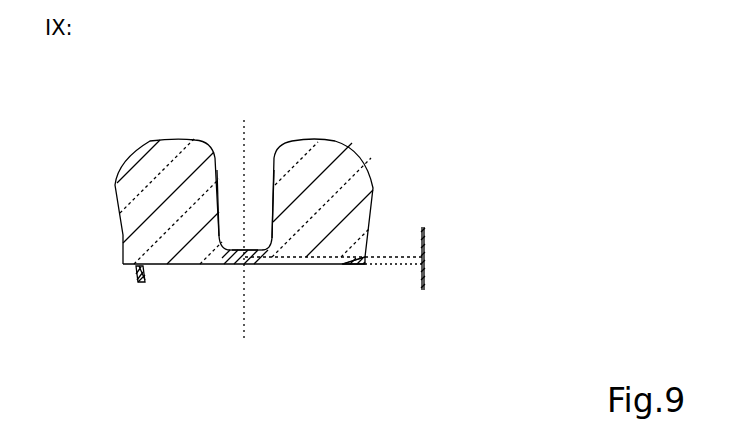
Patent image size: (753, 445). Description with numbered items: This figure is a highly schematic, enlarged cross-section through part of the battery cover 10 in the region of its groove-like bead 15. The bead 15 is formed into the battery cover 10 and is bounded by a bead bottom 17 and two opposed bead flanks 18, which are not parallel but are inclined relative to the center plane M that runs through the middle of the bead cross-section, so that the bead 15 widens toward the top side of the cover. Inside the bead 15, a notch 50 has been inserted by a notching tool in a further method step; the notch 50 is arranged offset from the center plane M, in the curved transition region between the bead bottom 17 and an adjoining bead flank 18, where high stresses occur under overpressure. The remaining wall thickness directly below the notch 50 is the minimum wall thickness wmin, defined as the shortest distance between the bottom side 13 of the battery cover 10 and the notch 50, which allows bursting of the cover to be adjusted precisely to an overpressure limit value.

The battery cover 10 is at (350, 165).
The bottom side 13 is at (142, 265).
The bead 15 is at (274, 92).
The bead bottom 17 is at (244, 252).
The bead flanks 18 is at (222, 250).
The notch 50 is at (226, 248).
The center plane M is at (243, 302).
The minimum wall thickness wmin is at (427, 259).